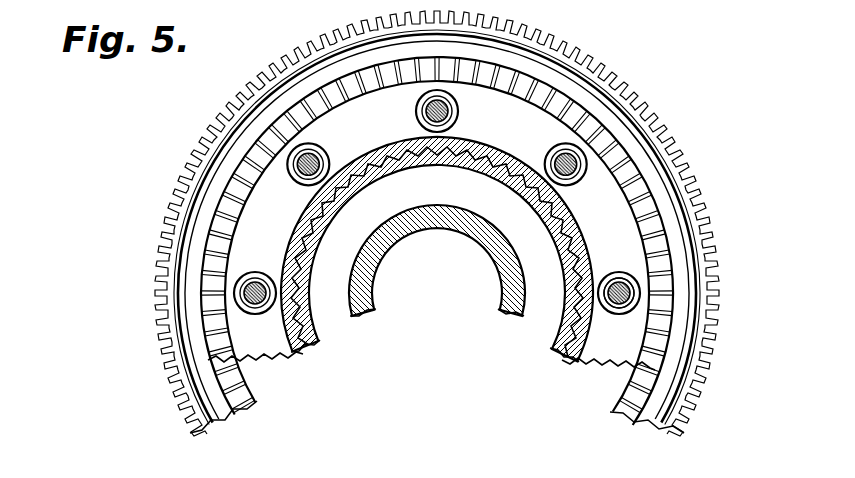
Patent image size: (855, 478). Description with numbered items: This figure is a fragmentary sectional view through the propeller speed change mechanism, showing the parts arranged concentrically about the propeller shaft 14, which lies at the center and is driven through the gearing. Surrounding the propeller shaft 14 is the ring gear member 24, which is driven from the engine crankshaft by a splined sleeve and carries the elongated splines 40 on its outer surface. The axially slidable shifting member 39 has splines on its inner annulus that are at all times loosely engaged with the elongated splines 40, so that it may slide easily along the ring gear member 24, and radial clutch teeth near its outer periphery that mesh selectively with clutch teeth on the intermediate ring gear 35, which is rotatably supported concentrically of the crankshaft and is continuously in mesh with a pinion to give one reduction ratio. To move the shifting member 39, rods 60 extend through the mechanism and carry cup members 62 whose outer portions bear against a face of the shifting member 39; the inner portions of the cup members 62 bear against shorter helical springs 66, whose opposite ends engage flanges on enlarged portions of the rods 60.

The propeller shaft 14 is at (369, 295).
The ring gear member 24 is at (322, 244).
The intermediate ring gear 35 is at (188, 413).
The shifting member 39 is at (215, 282).
The elongated splines 40 is at (320, 350).
The rods 60 is at (428, 111).
The cup members 62 is at (459, 112).
The shorter helical springs 66 is at (617, 278).